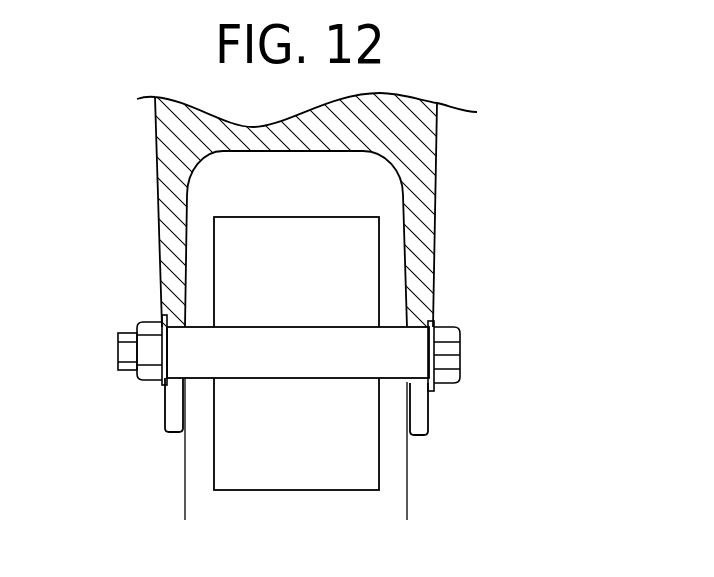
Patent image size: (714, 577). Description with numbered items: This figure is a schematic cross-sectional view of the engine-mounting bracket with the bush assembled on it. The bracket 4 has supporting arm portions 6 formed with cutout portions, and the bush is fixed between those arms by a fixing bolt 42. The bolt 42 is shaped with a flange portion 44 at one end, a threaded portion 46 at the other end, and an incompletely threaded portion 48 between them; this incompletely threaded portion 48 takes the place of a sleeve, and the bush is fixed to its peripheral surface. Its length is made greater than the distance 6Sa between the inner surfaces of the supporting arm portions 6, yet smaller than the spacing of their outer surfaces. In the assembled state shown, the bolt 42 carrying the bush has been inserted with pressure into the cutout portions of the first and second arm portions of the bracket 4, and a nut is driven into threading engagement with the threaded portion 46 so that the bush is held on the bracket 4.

The bracket 4 is at (432, 99).
The supporting arm portions 6 is at (442, 224).
The distance between the inner surfaces of the supporting arm portions 6Sa is at (197, 508).
The fixing bolt 42 is at (465, 327).
The flange portion 44 is at (436, 352).
The threaded portion 46 is at (130, 333).
The incompletely threaded portion 48 is at (258, 370).